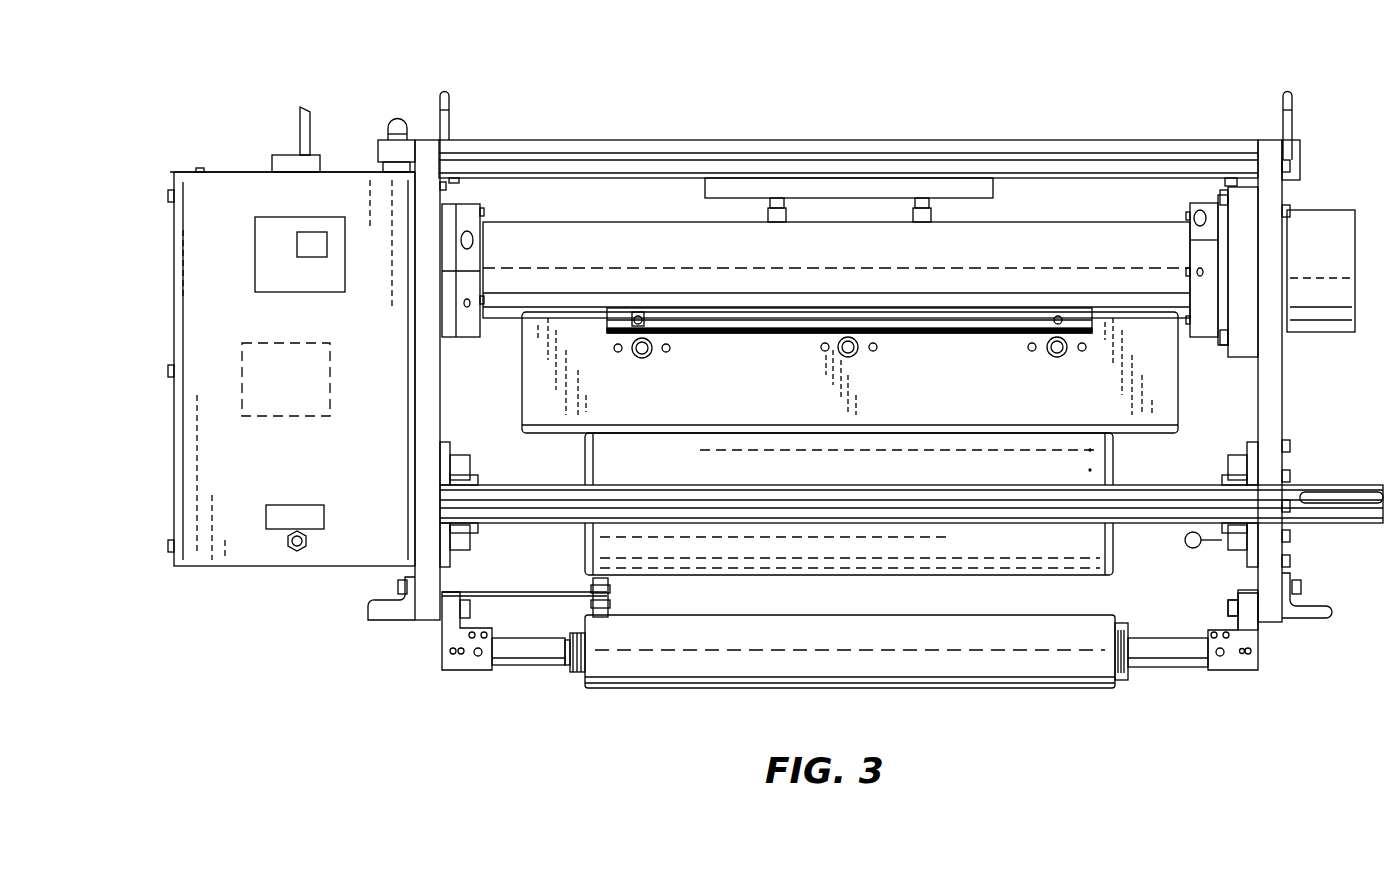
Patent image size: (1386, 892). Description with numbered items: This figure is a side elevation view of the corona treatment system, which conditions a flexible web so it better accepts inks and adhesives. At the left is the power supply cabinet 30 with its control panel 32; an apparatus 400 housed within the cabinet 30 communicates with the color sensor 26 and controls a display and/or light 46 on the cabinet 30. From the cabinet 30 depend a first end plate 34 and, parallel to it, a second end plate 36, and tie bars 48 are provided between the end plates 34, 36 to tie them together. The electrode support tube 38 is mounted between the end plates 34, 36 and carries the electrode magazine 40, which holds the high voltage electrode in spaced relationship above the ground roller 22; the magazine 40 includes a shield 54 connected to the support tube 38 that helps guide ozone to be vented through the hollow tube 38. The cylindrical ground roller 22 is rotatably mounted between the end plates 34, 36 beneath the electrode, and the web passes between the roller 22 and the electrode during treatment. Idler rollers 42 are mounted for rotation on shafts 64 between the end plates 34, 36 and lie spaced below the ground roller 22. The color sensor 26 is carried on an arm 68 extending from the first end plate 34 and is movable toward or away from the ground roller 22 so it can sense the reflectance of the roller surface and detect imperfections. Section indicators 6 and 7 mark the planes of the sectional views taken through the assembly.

The power supply cabinet 30 is at (235, 468).
The control panel 32 is at (255, 262).
The display and/or light 46 is at (312, 240).
The apparatus 400 is at (242, 365).
The first end plate 34 is at (430, 605).
The second end plate 36 is at (1270, 545).
The tie bars 48 is at (1035, 150).
The electrode support tube 38 is at (1310, 218).
The electrode magazine 40 is at (1200, 383).
The shield 54 is at (1115, 410).
The ground roller 22 is at (1012, 548).
The idler rollers 42 is at (1090, 665).
The arm 68 is at (487, 608).
The color sensor 26 is at (603, 605).
The shafts 64 is at (1167, 650).
The section line 6 is at (692, 234).
The section line 7 is at (507, 548).